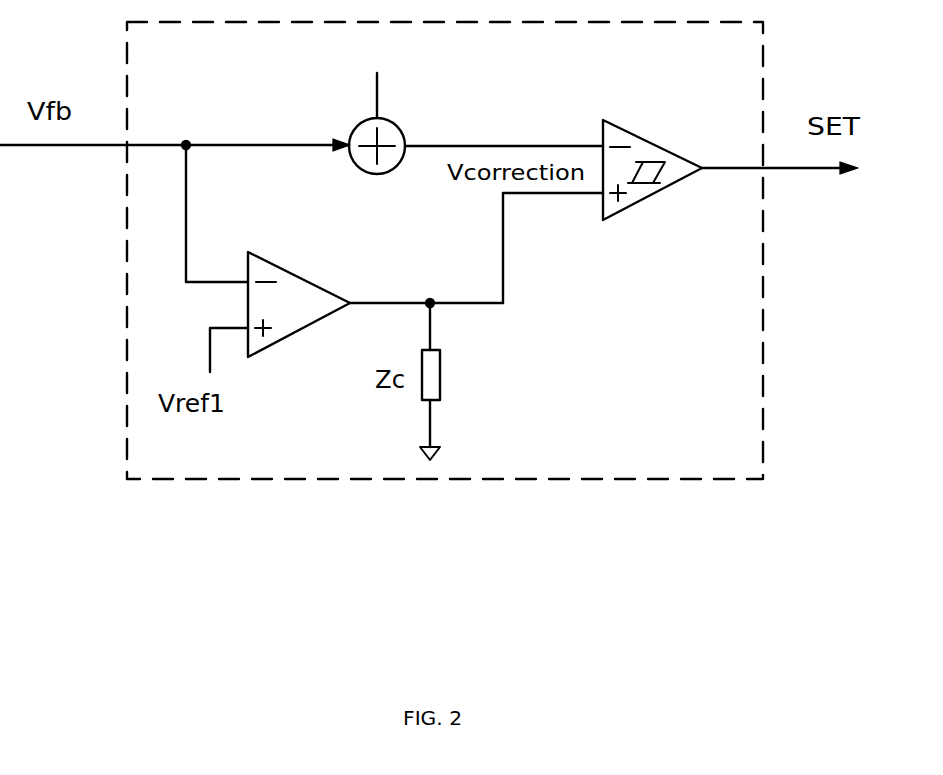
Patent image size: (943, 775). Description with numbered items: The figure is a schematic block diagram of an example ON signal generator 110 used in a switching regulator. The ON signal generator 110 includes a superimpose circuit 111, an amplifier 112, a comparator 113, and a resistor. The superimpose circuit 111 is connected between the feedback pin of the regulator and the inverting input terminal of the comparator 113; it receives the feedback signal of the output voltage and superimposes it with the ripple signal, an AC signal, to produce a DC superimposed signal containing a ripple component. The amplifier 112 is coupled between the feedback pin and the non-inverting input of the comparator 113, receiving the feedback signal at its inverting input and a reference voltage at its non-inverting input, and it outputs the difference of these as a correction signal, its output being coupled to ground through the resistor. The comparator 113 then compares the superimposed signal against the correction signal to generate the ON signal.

The ON signal generator 110 is at (645, 434).
The superimpose circuit 111 is at (405, 124).
The amplifier 112 is at (300, 272).
The comparator 113 is at (605, 122).